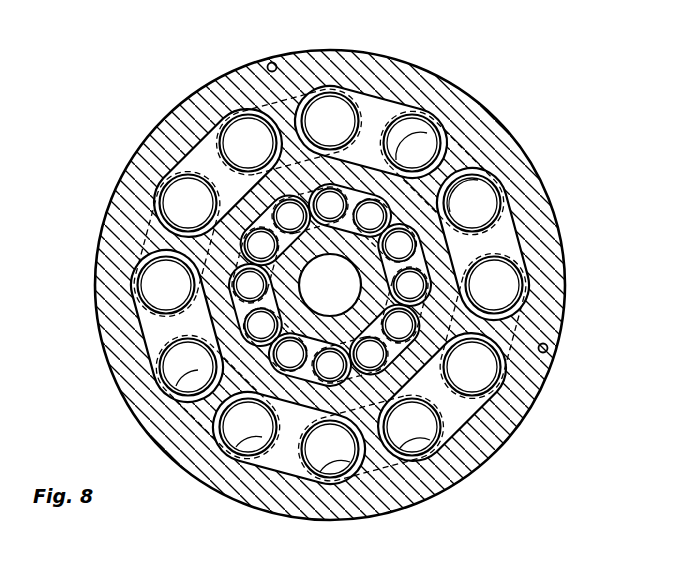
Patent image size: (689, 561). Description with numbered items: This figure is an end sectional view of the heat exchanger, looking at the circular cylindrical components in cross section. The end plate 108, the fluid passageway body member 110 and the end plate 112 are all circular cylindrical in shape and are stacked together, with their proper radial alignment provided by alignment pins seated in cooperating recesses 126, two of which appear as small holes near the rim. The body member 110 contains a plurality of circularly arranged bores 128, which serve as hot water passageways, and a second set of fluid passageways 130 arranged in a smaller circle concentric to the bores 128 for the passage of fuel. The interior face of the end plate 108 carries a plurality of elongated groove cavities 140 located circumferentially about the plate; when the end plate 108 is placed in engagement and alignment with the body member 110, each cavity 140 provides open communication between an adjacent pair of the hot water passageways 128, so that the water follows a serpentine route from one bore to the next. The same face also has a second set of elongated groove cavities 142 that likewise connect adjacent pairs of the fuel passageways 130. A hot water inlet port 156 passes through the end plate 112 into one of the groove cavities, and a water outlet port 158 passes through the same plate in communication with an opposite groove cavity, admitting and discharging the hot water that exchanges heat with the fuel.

The end plate 108 is at (561, 275).
The fluid passageway body member 110 is at (380, 116).
The end plate 112 is at (410, 137).
The recesses 126 is at (270, 62).
The bores 128 is at (503, 388).
The fluid passageways 130 is at (400, 325).
The elongated groove cavities 140 is at (510, 248).
The elongated groove cavities 142 is at (453, 356).
The hot water inlet port 156 is at (457, 186).
The water outlet port 158 is at (208, 380).